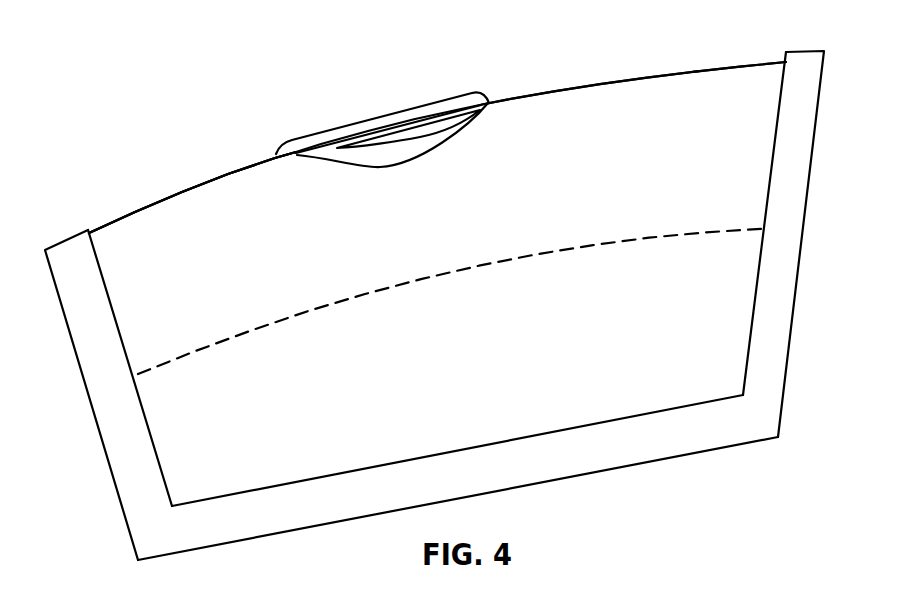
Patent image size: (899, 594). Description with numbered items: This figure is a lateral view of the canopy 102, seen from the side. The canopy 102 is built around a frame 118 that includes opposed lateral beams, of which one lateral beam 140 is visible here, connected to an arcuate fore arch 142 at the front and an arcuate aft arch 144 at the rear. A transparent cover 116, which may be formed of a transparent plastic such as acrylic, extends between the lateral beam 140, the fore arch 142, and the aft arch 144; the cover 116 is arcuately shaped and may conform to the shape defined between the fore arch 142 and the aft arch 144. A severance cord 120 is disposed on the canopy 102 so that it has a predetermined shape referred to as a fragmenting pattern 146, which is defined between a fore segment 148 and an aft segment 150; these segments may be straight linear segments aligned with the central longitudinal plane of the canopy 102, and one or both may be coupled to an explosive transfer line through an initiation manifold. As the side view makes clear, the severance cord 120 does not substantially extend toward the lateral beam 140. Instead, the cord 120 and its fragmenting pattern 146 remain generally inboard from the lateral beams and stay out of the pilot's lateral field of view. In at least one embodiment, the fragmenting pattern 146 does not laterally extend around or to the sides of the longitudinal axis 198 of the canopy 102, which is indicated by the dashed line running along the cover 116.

The canopy 102 is at (300, 99).
The transparent cover 116 is at (195, 215).
The frame 118 is at (711, 468).
The severance cord 120 is at (628, 79).
The lateral beam 140 is at (530, 473).
The fore arch 142 is at (112, 476).
The aft arch 144 is at (793, 312).
The fragmenting pattern 146 is at (385, 116).
The fore segment 148 is at (217, 180).
The aft segment 150 is at (700, 70).
The longitudinal axis 198 is at (548, 255).